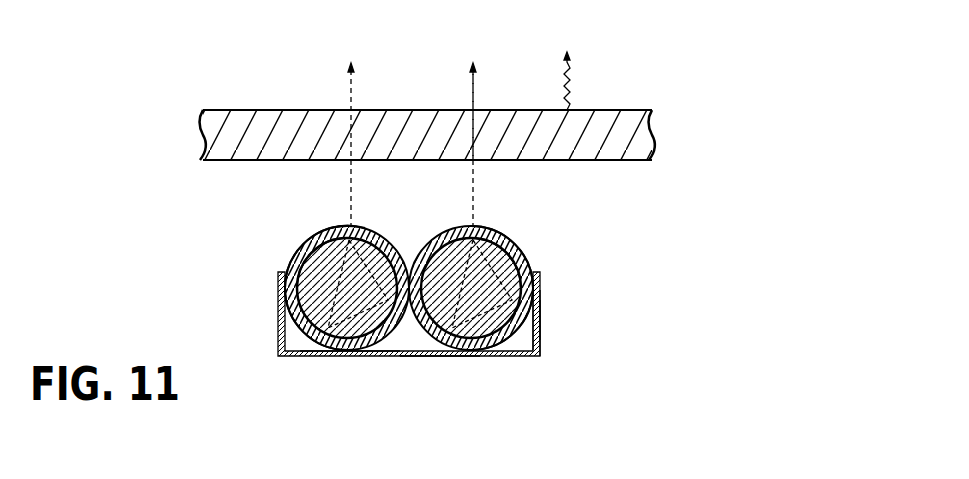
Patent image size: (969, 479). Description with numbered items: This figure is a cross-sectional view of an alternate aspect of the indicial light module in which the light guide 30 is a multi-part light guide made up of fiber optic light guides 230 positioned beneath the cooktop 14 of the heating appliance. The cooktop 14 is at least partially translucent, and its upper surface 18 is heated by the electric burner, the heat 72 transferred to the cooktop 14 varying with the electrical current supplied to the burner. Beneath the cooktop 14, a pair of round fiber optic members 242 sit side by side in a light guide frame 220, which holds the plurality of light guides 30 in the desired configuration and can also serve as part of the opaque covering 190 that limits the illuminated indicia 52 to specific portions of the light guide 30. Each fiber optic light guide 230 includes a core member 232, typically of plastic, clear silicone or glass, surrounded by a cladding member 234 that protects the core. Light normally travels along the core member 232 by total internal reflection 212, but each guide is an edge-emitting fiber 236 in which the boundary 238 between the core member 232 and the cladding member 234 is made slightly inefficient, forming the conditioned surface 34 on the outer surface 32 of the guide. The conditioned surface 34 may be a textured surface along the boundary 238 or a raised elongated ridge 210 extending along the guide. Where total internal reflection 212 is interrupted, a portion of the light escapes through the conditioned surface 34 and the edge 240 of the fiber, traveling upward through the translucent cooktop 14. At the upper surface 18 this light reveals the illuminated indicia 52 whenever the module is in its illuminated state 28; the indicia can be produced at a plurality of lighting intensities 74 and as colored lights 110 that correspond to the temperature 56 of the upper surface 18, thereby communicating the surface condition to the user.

The cooktop 14 is at (290, 108).
The upper surface 18 is at (625, 110).
The temperature 56 is at (607, 95).
The lighting intensities 74 is at (360, 92).
The colored lights 110 is at (465, 90).
The illuminated indicia 52 is at (478, 60).
The heat 72 is at (568, 80).
The light guide frame 220 is at (278, 330).
The cladding member 234 is at (346, 353).
The core member 232 is at (436, 351).
The opaque covering 190 is at (540, 340).
The conditioned surface 34 is at (330, 225).
The edge-emitting fiber 236 is at (288, 230).
The edge 240 is at (357, 225).
The total internal reflection 212 is at (300, 256).
The light guide 30 is at (250, 270).
The outer surface 32 is at (495, 226).
The fiber optic members 242 is at (563, 233).
The raised elongated ridge 210 is at (520, 240).
The boundary 238 is at (487, 355).
The illuminated state 28 is at (626, 305).
The fiber optic light guide 230 is at (580, 326).